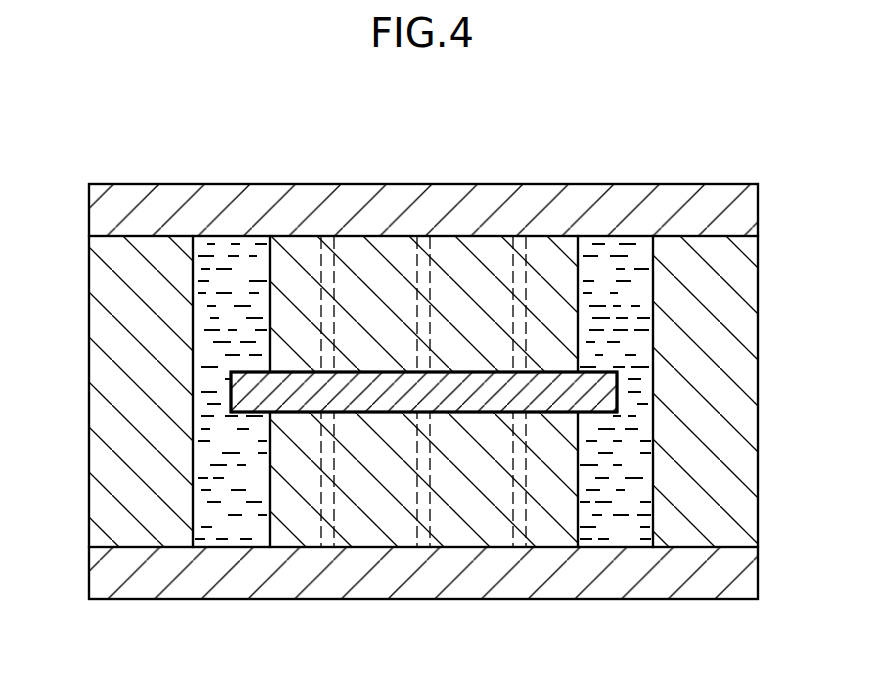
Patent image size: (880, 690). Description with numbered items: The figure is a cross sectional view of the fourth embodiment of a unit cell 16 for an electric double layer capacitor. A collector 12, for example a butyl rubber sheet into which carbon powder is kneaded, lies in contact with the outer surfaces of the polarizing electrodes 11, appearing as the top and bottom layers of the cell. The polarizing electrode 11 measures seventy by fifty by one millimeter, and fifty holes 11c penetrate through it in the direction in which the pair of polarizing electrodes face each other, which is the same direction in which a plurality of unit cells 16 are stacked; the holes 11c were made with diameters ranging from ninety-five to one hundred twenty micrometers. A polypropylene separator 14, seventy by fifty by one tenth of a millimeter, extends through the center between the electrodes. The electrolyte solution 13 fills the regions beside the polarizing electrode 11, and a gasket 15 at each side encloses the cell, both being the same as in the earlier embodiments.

The unit cell 16 is at (164, 164).
The collector 12 is at (573, 203).
The gasket 15 is at (130, 505).
The electrolyte solution 13 is at (633, 292).
The polarizing electrode 11 is at (378, 282).
The holes 11c is at (322, 267).
The separator 14 is at (603, 385).